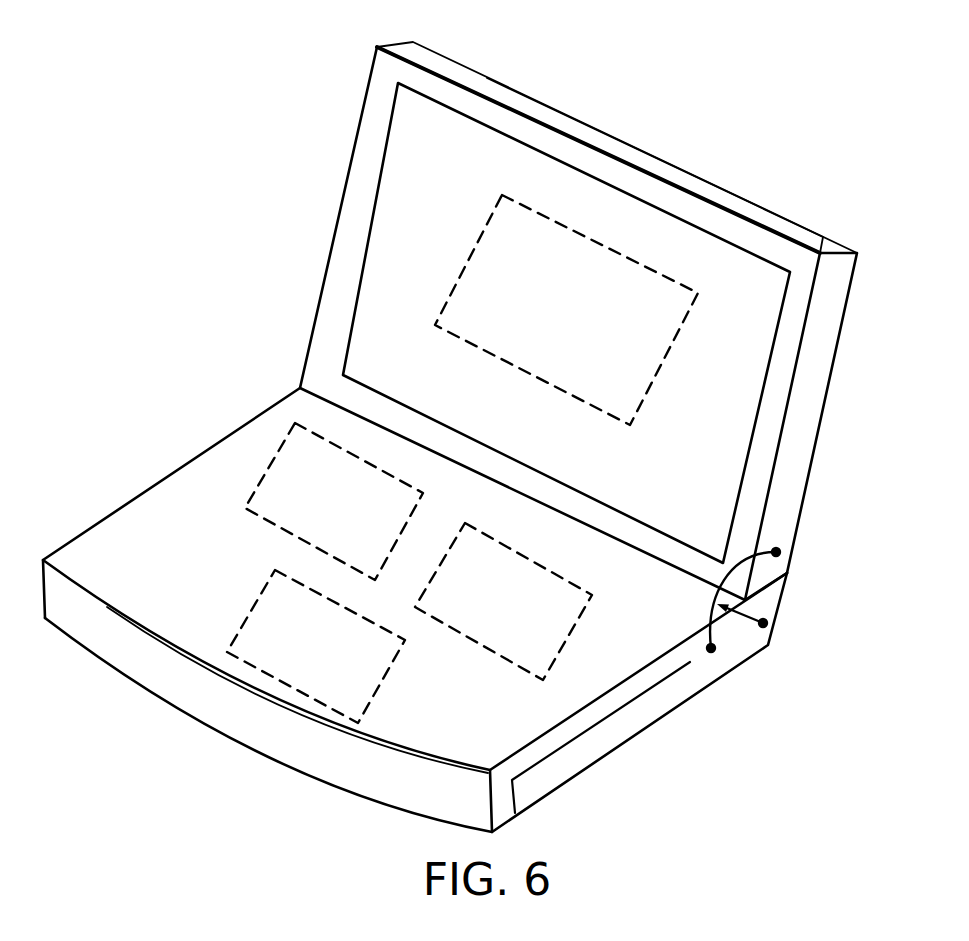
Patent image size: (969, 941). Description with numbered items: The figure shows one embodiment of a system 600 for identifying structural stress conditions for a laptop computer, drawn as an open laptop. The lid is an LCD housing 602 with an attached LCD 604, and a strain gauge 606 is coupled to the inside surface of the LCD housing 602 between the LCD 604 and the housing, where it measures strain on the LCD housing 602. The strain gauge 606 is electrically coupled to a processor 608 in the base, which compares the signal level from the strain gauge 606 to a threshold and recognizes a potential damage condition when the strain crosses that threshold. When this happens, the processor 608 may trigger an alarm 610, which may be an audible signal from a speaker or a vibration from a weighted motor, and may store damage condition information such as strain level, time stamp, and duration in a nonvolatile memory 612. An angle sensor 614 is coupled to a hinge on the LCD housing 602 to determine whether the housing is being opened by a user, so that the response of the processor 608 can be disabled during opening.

The system 600 is at (450, 422).
The LCD housing 602 is at (377, 47).
The LCD 604 is at (383, 165).
The strain gauge 606 is at (566, 310).
The processor 608 is at (334, 501).
The alarm 610 is at (316, 646).
The memory 612 is at (503, 601).
The angle sensor 614 is at (776, 617).